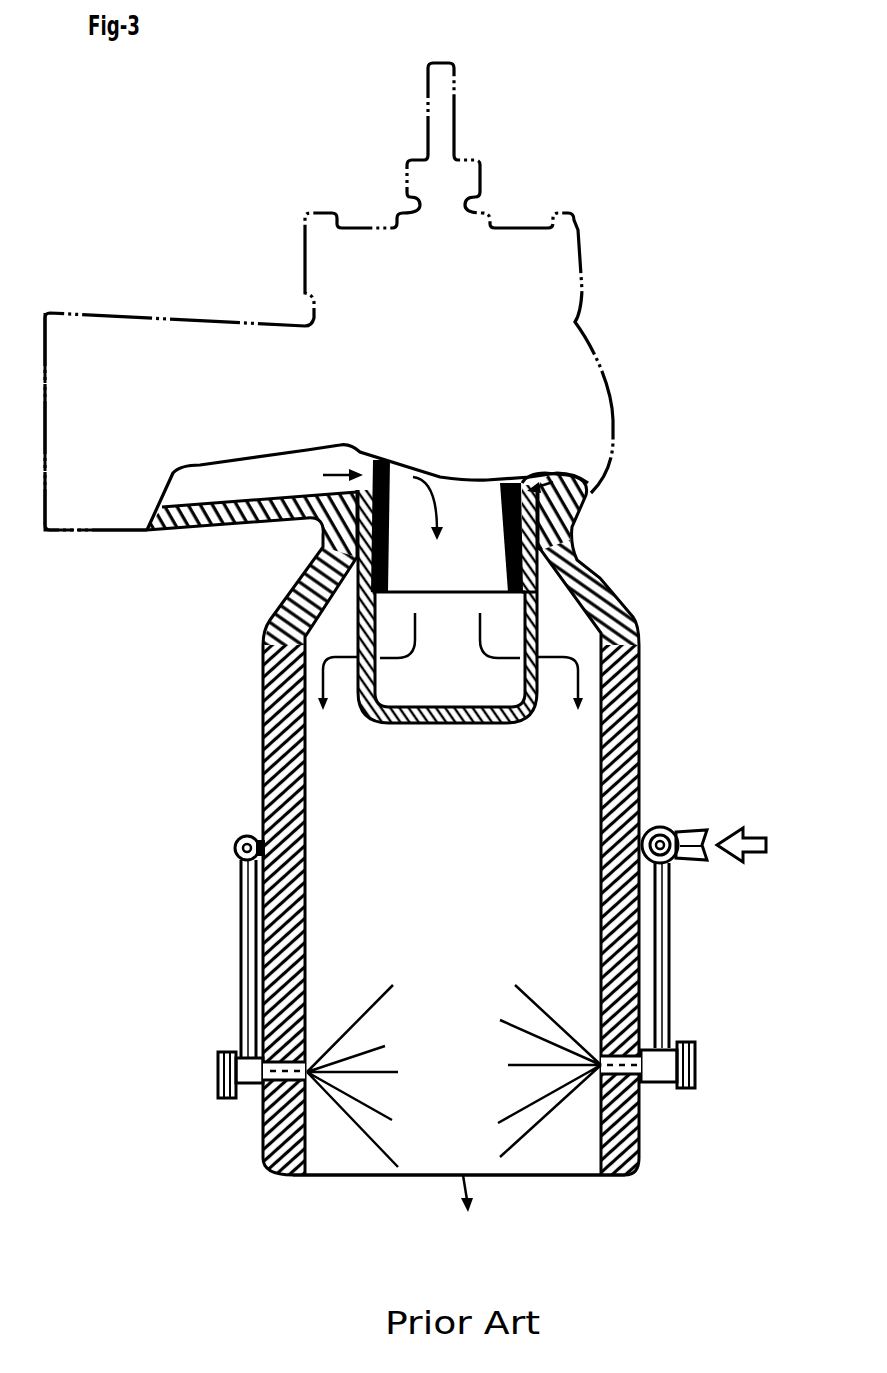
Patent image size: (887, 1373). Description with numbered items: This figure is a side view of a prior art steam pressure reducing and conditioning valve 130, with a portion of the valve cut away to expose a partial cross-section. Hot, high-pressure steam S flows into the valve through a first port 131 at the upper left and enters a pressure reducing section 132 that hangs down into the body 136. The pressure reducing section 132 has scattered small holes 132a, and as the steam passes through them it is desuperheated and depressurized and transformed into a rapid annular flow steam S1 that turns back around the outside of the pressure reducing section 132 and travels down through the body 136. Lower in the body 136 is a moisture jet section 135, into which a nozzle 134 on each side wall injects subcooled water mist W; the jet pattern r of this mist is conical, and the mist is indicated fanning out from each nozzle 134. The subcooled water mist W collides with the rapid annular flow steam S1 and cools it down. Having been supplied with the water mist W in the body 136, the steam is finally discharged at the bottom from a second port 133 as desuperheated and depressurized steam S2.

The steam pressure reducing and conditioning valve 130 is at (643, 352).
The first port 131 is at (80, 532).
The pressure reducing section 132 is at (438, 724).
The small holes 132a is at (540, 628).
The second port 133 is at (545, 1177).
The nozzle 134 is at (247, 1097).
The moisture jet section 135 is at (330, 847).
The body 136 is at (640, 758).
The steam S is at (323, 470).
The rapid annular flow steam S1 is at (320, 687).
The desuperheated and depressurized steam S2 is at (486, 1216).
The subcooled water mist W is at (375, 1052).
The jet pattern r is at (542, 1014).